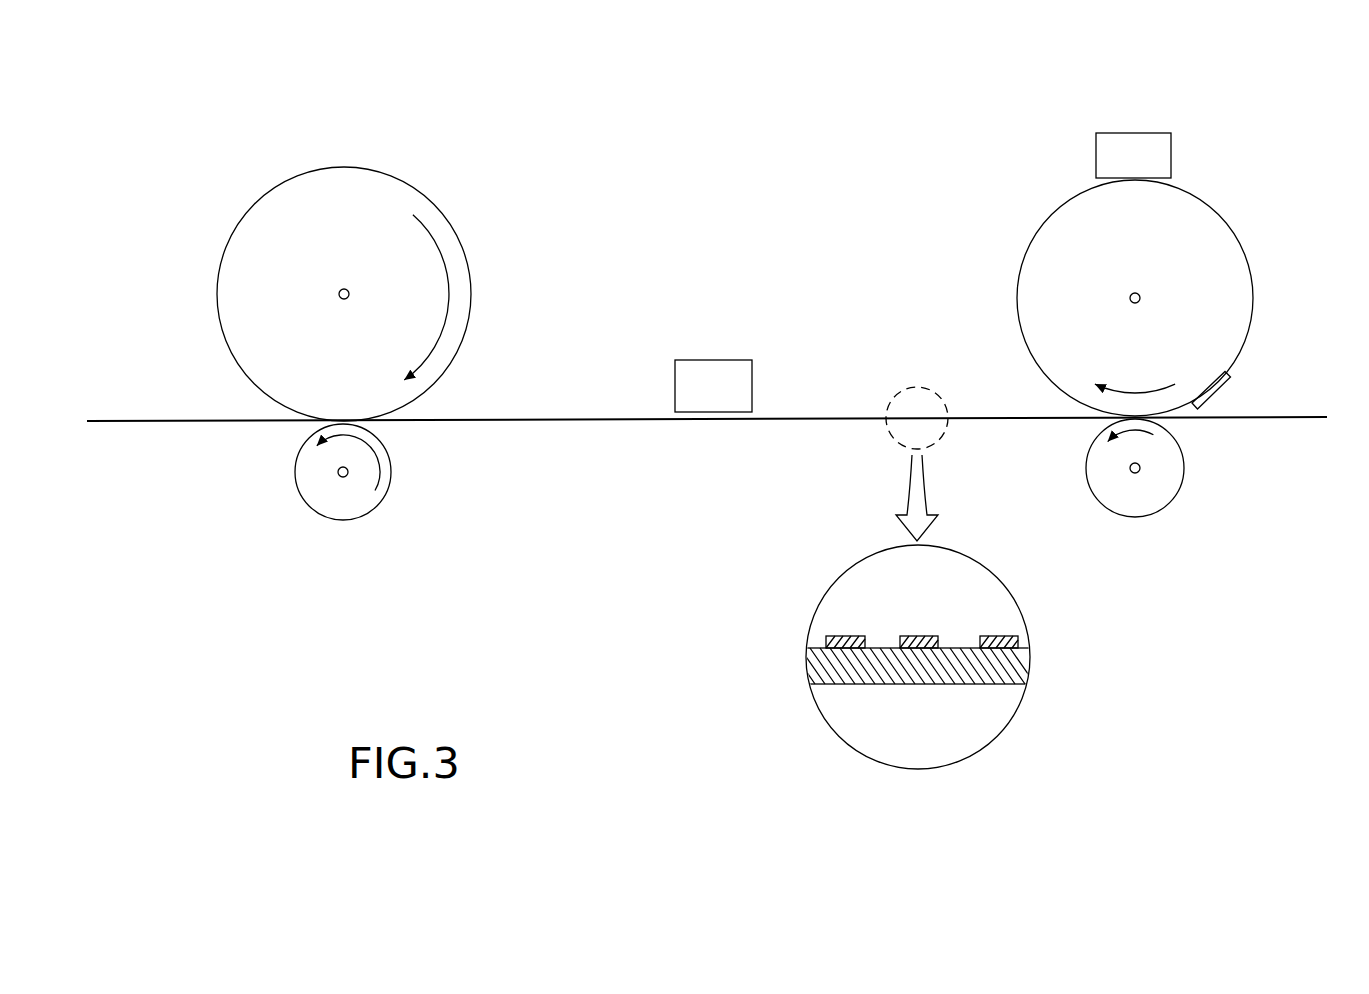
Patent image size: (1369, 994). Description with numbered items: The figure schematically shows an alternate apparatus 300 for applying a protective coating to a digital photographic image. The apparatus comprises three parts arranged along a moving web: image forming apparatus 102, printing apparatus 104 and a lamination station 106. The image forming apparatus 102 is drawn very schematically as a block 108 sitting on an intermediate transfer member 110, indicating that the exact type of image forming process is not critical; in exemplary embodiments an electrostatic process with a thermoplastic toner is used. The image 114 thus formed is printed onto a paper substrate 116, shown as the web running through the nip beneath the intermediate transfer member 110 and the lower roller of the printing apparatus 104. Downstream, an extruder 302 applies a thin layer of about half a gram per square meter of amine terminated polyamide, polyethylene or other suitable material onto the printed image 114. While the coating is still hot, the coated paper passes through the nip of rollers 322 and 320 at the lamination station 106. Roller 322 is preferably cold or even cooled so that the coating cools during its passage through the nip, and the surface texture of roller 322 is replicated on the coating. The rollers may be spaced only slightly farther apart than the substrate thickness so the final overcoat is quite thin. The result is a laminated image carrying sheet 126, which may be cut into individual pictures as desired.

The alternate apparatus 300 is at (697, 200).
The extruder 302 is at (700, 360).
The image forming apparatus 102 is at (1080, 383).
The printing apparatus 104 is at (1232, 507).
The lamination station 106 is at (353, 357).
The block 108 is at (1171, 162).
The intermediate transfer member 110 is at (1227, 218).
The image 114 is at (1233, 373).
The substrate 116 is at (1249, 418).
The laminated image carrying sheet 126 is at (182, 422).
The roller 320 is at (298, 487).
The roller 322 is at (459, 342).